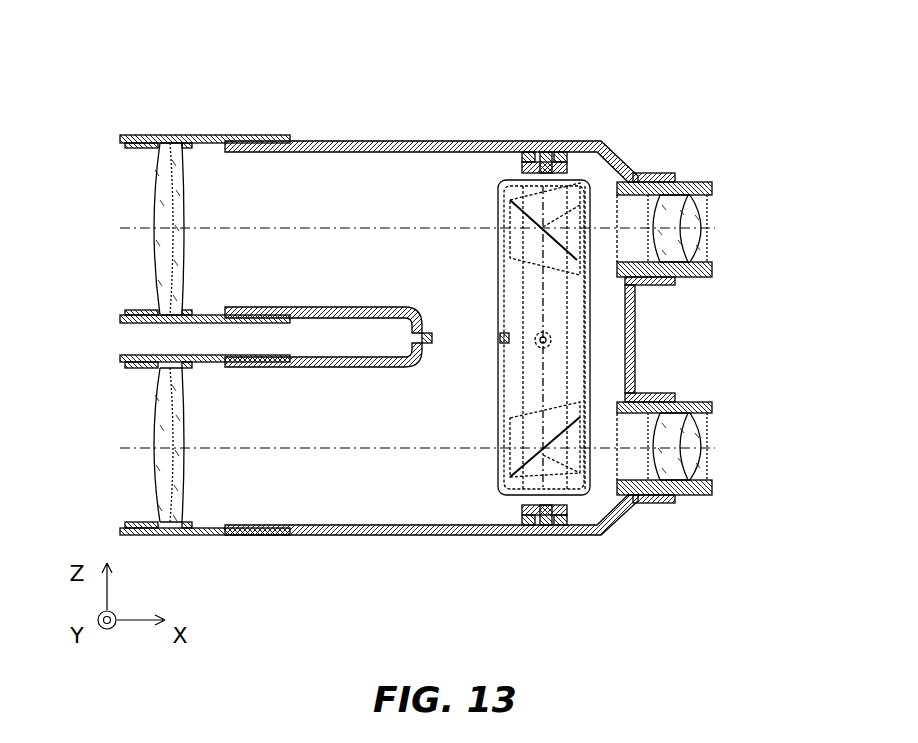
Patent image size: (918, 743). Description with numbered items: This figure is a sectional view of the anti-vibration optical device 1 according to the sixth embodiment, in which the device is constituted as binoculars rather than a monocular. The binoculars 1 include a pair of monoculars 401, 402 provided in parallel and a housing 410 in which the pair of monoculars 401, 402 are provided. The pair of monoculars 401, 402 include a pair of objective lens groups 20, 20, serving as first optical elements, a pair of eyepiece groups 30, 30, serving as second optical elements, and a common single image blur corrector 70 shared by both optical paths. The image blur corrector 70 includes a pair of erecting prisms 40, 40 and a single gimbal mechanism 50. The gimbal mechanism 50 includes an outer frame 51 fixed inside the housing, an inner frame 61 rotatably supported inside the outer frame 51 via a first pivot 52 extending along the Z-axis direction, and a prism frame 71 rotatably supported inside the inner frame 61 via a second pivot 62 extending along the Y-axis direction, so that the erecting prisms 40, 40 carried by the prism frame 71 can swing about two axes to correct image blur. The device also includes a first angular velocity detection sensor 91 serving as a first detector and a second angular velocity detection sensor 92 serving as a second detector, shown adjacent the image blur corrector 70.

The anti-vibration optical device 1 is at (757, 100).
The objective lens group 20 is at (152, 176).
The eyepiece group 30 is at (712, 212).
The erecting prism 40 is at (590, 199).
The gimbal mechanism 50 is at (577, 163).
The outer frame 51 is at (517, 527).
The first pivot 52 is at (546, 150).
The inner frame 61 is at (520, 507).
The second pivot 62 is at (553, 345).
The image blur corrector 70 is at (573, 128).
The prism frame 71 is at (497, 467).
The first angular velocity detection sensor 91 is at (432, 338).
The second angular velocity detection sensor 92 is at (500, 338).
The monocular 401 is at (709, 171).
The monocular 402 is at (701, 514).
The housing 410 is at (635, 318).